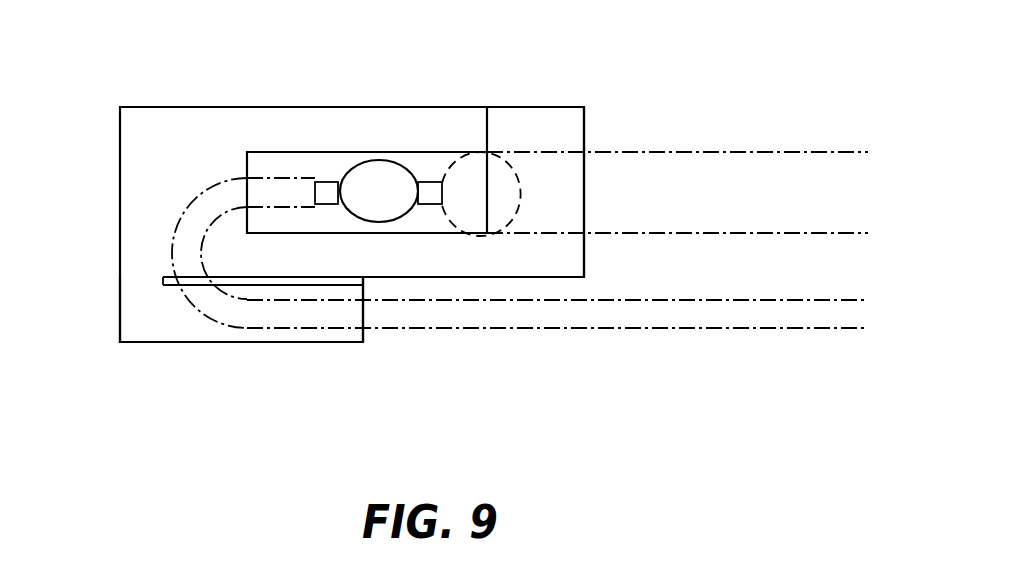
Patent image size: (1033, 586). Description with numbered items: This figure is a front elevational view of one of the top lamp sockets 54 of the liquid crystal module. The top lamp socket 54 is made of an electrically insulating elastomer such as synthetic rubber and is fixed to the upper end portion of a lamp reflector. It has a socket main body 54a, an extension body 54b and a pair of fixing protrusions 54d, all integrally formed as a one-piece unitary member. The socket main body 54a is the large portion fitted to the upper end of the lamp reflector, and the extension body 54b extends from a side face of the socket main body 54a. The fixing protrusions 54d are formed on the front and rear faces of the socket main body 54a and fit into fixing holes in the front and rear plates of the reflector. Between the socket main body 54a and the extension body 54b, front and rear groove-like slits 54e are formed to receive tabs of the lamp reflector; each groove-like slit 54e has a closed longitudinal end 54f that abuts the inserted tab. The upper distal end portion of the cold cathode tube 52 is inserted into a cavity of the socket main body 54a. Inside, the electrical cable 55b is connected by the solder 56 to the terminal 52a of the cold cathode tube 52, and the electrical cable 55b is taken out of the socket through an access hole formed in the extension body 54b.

The top lamp socket 54 is at (181, 89).
The socket main body 54a is at (527, 125).
The extension body 54b is at (176, 328).
The fixing protrusion 54d is at (310, 152).
The groove-like slit 54e is at (294, 285).
The closed longitudinal end 54f is at (163, 280).
The cold cathode tube 52 is at (695, 150).
The terminal 52a is at (430, 182).
The electrical cable 55b is at (650, 330).
The solder 56 is at (402, 220).